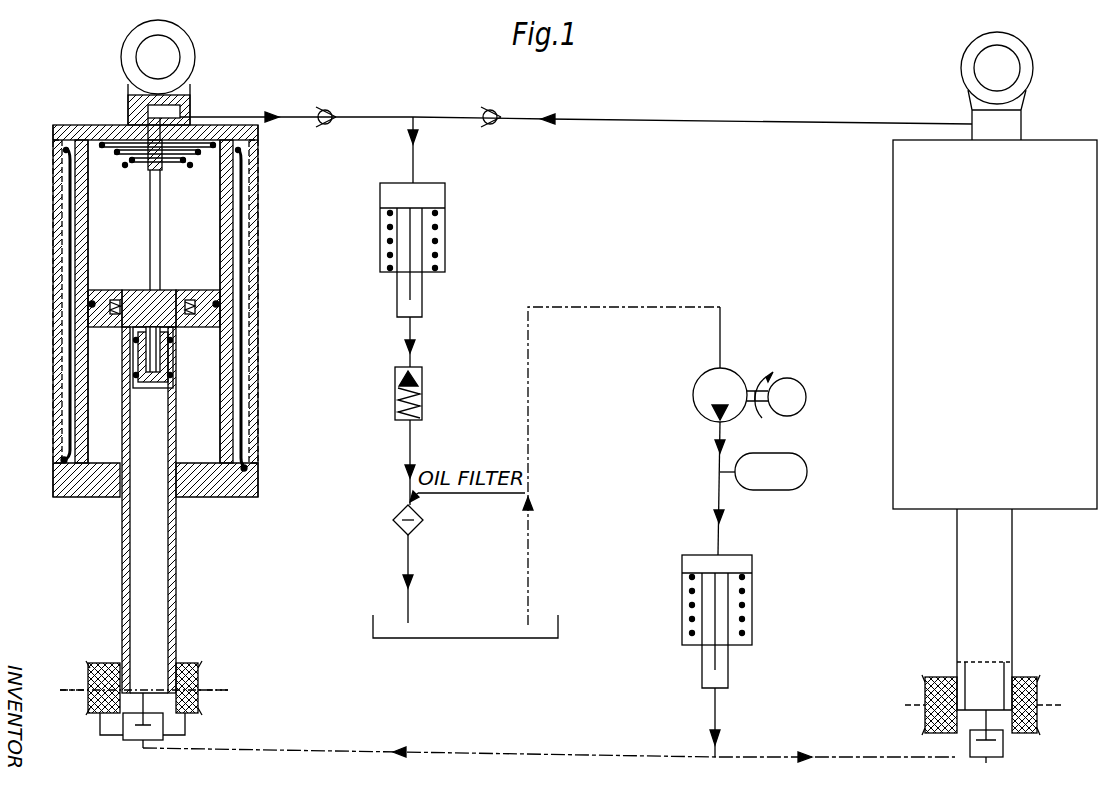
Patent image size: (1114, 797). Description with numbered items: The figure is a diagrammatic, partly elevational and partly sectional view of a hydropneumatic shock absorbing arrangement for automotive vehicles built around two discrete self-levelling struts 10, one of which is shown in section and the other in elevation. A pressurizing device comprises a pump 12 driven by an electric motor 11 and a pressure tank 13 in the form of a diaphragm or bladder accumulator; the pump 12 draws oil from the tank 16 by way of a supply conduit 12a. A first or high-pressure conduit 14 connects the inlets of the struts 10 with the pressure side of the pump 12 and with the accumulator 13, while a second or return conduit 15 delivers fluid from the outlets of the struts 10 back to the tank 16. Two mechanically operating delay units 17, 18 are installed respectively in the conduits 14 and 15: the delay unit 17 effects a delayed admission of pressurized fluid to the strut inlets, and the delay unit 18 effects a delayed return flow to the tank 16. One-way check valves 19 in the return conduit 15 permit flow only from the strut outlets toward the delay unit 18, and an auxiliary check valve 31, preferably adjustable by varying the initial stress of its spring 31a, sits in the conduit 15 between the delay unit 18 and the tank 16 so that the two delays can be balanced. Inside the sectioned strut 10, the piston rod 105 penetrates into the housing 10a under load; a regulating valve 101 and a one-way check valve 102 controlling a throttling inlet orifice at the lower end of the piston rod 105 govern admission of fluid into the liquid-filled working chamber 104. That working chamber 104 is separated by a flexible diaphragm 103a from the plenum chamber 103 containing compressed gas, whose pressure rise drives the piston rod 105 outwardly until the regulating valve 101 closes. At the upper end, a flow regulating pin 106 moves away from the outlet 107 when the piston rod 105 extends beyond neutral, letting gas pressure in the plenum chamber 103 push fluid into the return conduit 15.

The self-levelling strut 10 is at (893, 241).
The housing 10a is at (60, 352).
The electric motor 11 is at (792, 380).
The pump 12 is at (712, 374).
The supply conduit 12a is at (528, 428).
The pressure tank 13 is at (795, 466).
The high-pressure conduit 14 is at (722, 718).
The return conduit 15 is at (370, 114).
The tank 16 is at (492, 642).
The delay unit 17 is at (752, 593).
The delay unit 18 is at (445, 228).
The one-way check valve 19 is at (324, 110).
The auxiliary check valve 31 is at (424, 392).
The spring 31a is at (420, 418).
The regulating valve 101 is at (173, 367).
The one-way check valve 102 is at (150, 690).
The plenum chamber 103 is at (241, 440).
The flexible diaphragm 103a is at (70, 250).
The working chamber 104 is at (243, 200).
The piston rod 105 is at (176, 540).
The flow regulating pin 106 is at (150, 160).
The outlet 107 is at (150, 122).